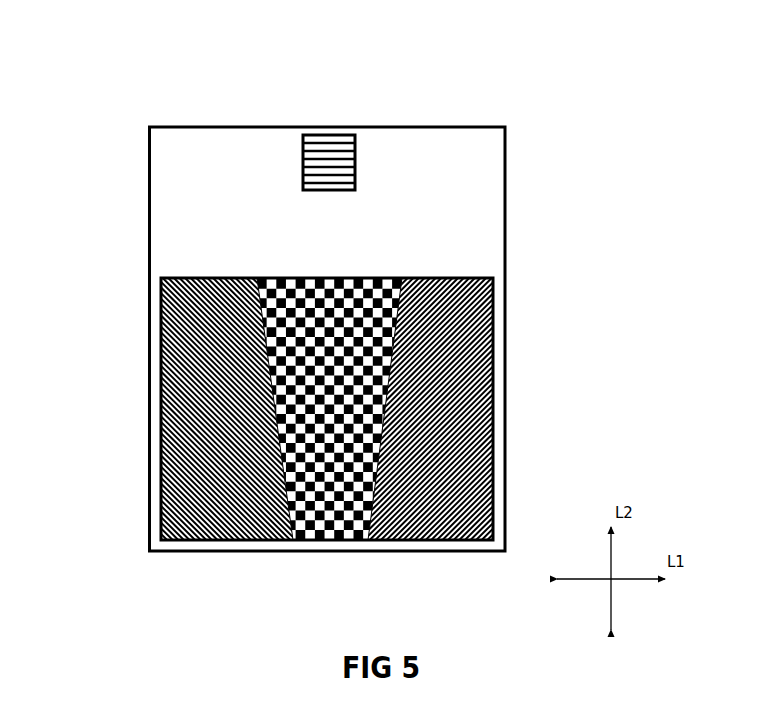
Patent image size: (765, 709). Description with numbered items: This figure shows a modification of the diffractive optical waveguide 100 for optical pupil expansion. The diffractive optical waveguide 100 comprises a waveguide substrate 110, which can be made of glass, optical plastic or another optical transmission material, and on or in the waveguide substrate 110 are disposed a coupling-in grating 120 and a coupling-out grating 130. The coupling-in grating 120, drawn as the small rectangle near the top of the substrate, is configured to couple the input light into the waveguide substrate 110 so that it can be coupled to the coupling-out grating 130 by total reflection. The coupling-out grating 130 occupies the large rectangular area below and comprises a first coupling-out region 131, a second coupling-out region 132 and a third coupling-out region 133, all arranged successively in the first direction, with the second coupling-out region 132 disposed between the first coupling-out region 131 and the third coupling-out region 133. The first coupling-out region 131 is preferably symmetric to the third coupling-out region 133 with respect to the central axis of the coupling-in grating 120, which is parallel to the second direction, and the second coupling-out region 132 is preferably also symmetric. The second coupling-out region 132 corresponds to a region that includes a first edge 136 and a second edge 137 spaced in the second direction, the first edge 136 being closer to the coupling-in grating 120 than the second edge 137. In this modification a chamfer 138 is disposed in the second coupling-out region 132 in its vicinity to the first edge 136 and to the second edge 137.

The diffractive optical waveguide 100 is at (290, 287).
The waveguide substrate 110 is at (448, 163).
The coupling-in grating 120 is at (362, 163).
The coupling-out grating 130 is at (377, 375).
The first coupling-out region 131 is at (180, 388).
The second coupling-out region 132 is at (357, 302).
The third coupling-out region 133 is at (460, 477).
The first edge 136 is at (280, 280).
The second edge 137 is at (340, 540).
The chamfer 138 is at (412, 283).